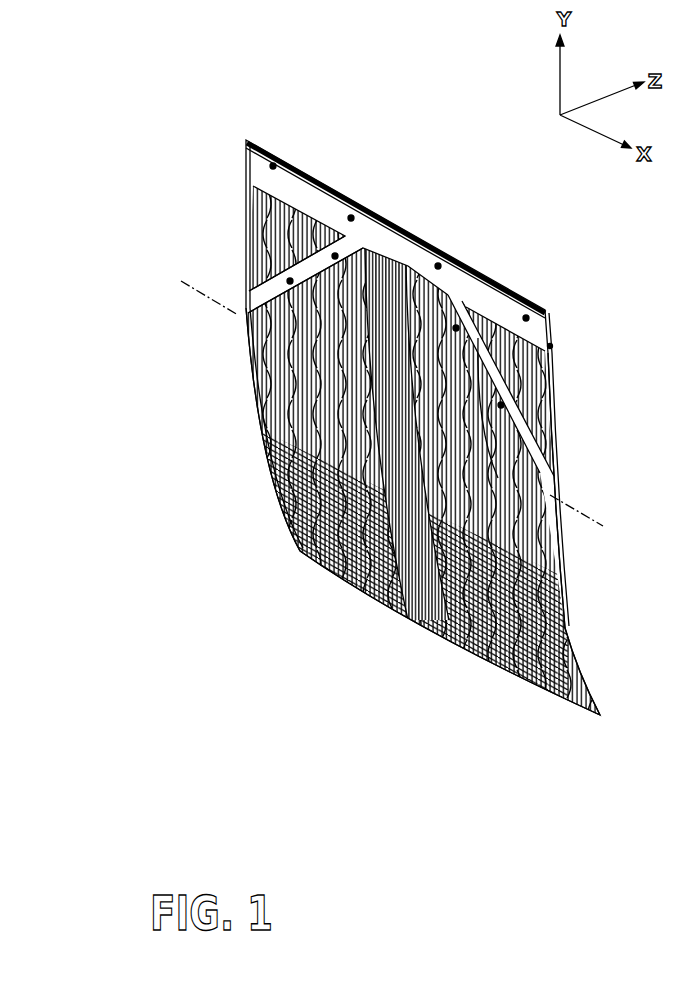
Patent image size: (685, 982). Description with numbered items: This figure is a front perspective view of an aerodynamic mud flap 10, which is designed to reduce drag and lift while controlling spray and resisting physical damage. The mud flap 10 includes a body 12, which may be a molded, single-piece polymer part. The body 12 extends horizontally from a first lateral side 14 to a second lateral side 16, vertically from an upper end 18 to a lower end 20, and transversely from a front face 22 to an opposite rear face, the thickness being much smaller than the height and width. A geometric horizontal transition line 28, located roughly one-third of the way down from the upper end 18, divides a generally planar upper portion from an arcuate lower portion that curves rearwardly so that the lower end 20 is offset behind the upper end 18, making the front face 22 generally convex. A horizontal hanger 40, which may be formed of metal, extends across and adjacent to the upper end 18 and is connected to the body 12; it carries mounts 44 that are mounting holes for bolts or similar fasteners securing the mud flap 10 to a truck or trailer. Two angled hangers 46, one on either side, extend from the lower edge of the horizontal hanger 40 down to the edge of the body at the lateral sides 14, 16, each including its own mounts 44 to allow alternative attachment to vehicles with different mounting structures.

The aerodynamic mud flap 10 is at (400, 133).
The body 12 is at (240, 390).
The first lateral side 14 is at (237, 353).
The second lateral side 16 is at (540, 541).
The upper end 18 is at (483, 337).
The lower end 20 is at (500, 665).
The front face 22 is at (540, 388).
The transition line 28 is at (207, 293).
The horizontal hanger 40 is at (313, 167).
The mount 44 is at (430, 258).
The angled hanger 46 is at (240, 250).